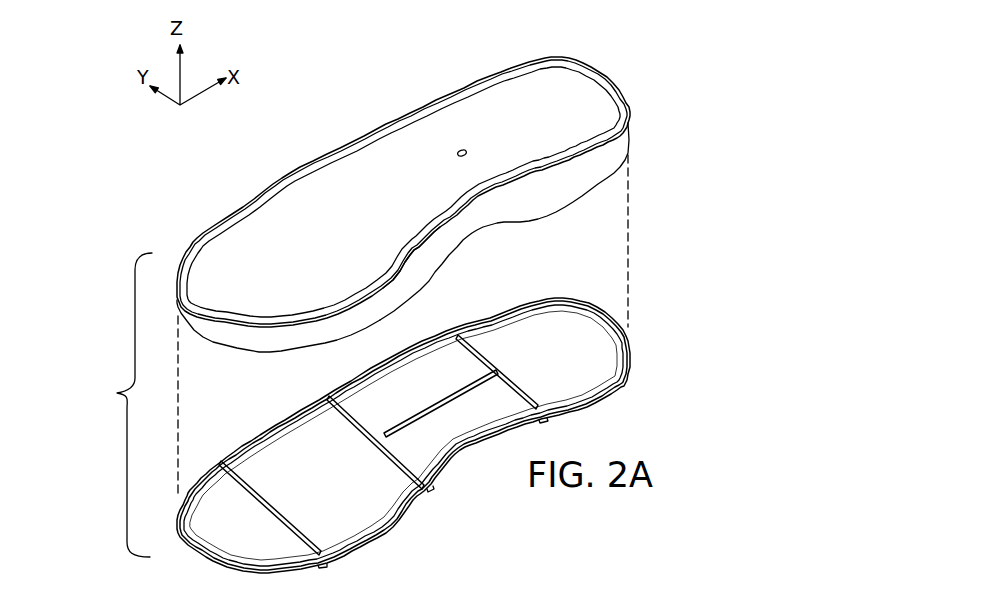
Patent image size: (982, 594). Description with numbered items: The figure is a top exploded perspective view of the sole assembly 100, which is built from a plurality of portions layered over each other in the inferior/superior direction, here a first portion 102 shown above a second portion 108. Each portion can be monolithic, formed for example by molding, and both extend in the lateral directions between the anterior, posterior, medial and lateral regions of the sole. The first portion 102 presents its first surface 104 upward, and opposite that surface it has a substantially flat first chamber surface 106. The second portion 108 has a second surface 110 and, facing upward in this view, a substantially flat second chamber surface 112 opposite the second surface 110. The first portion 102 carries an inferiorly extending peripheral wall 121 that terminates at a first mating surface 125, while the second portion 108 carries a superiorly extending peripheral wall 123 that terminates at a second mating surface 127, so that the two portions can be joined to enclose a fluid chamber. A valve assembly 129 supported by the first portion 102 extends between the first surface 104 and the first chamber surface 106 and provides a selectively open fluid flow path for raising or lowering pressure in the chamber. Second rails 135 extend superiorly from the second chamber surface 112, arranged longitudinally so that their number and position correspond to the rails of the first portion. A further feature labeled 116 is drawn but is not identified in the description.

The sole assembly 100 is at (350, 356).
The first portion 102 is at (607, 65).
The first surface 104 is at (377, 230).
The first chamber surface 106 is at (487, 225).
The second portion 108 is at (612, 398).
The second surface 110 is at (400, 527).
The second chamber surface 112 is at (347, 482).
The peripheral ledge 116 is at (273, 187).
The peripheral wall 121 is at (403, 285).
The peripheral wall 123 is at (253, 447).
The first mating surface 125 is at (333, 337).
The second mating surface 127 is at (340, 543).
The valve assembly 129 is at (472, 147).
The second rails 135 is at (437, 397).